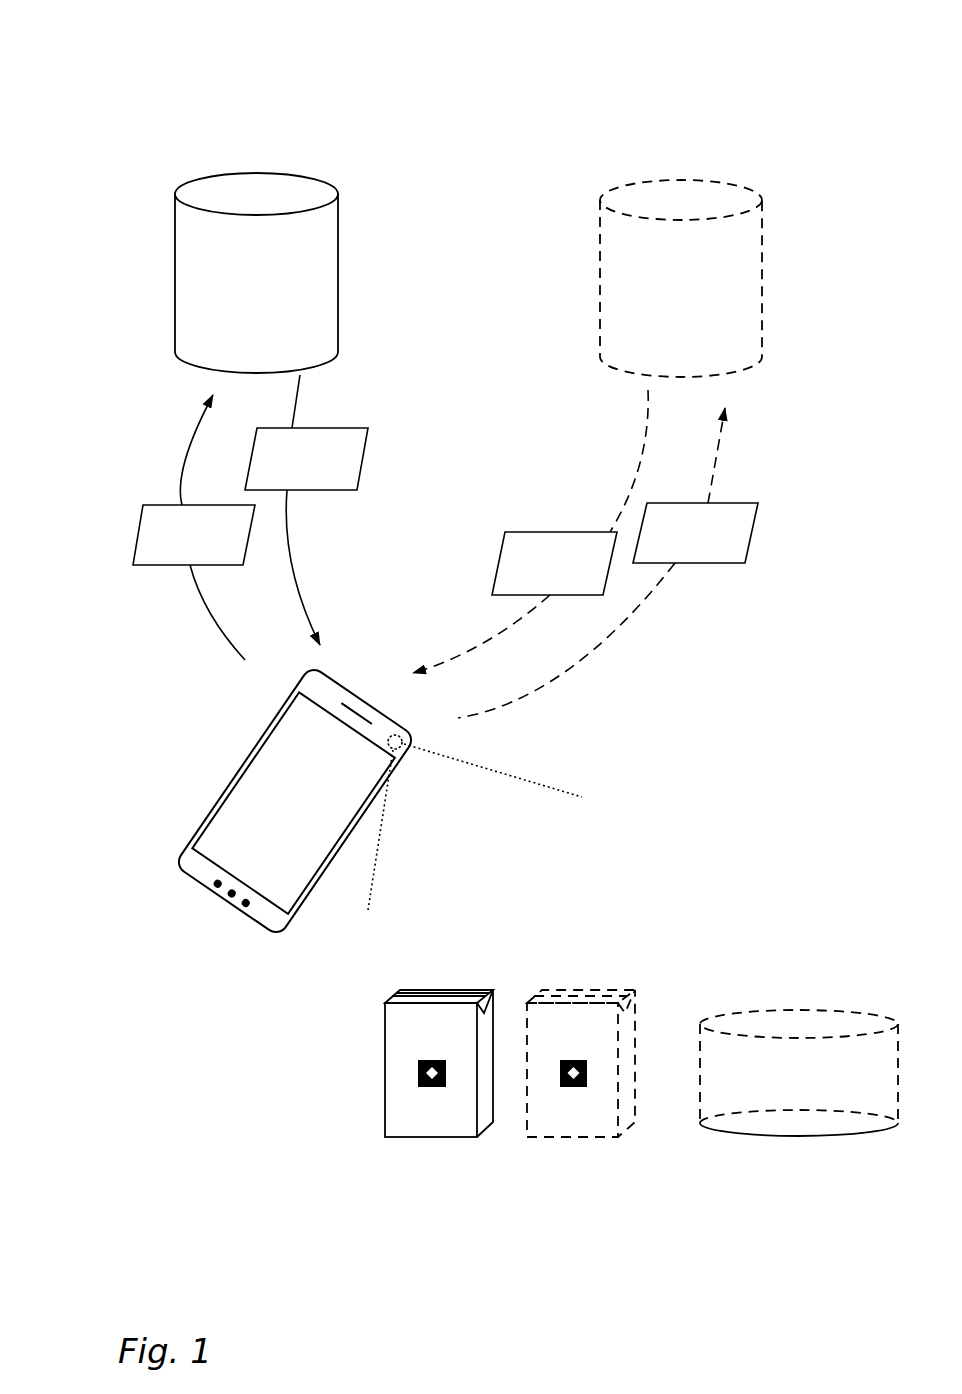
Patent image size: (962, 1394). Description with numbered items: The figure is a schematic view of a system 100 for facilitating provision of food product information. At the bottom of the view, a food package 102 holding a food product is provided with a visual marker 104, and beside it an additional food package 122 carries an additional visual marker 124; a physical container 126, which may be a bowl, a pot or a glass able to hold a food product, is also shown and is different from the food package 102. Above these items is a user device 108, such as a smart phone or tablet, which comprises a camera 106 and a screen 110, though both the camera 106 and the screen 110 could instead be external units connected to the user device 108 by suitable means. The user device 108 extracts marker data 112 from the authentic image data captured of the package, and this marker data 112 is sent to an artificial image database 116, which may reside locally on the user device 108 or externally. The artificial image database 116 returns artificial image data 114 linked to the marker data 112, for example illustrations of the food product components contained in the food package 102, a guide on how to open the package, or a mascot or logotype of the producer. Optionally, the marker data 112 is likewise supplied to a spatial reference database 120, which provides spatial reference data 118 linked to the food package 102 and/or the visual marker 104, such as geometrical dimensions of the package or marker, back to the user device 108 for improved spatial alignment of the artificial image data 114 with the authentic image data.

The system 100 is at (100, 112).
The food package 102 is at (413, 1137).
The visual marker 104 is at (418, 1076).
The camera 106 is at (394, 734).
The user device 108 is at (240, 762).
The screen 110 is at (255, 825).
The marker data 112 is at (135, 540).
The artificial image data 114 is at (368, 455).
The artificial image database 116 is at (278, 177).
The spatial reference data 118 is at (490, 567).
The spatial reference database 120 is at (735, 183).
The additional food package 122 is at (553, 1137).
The additional visual marker 124 is at (575, 1060).
The physical container 126 is at (768, 1137).